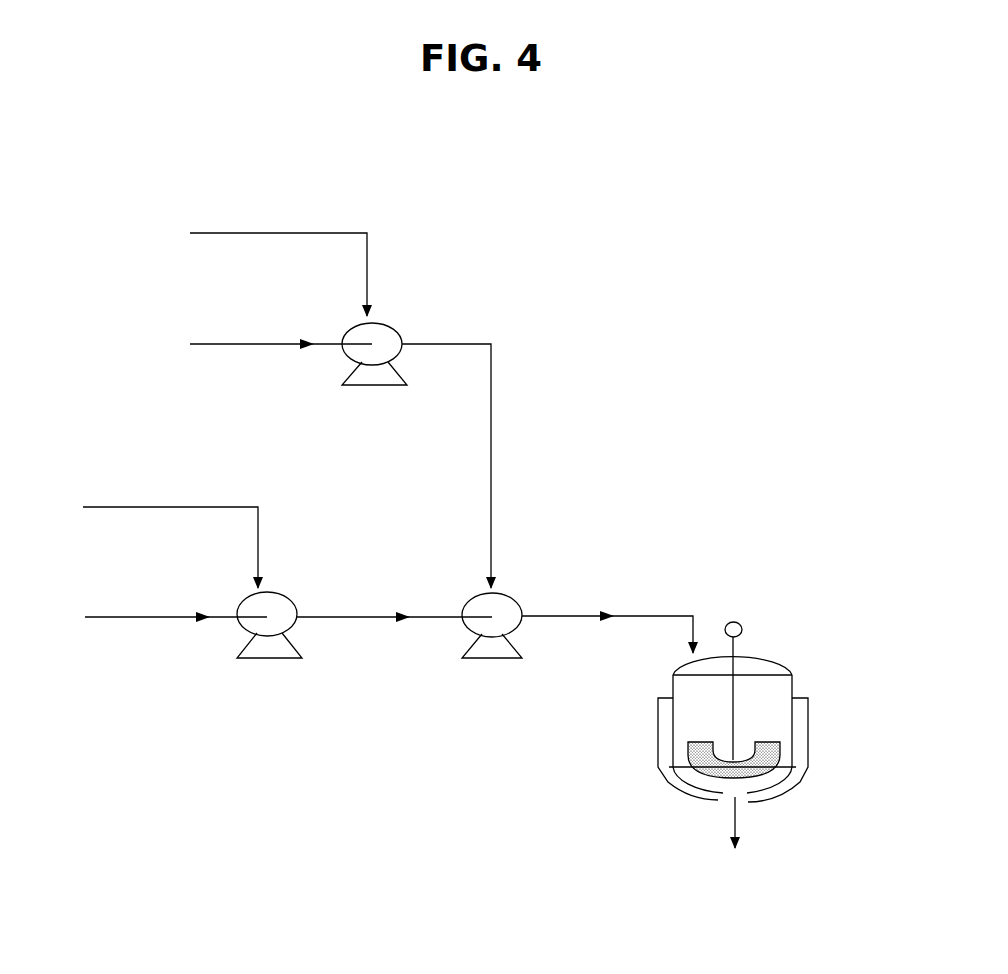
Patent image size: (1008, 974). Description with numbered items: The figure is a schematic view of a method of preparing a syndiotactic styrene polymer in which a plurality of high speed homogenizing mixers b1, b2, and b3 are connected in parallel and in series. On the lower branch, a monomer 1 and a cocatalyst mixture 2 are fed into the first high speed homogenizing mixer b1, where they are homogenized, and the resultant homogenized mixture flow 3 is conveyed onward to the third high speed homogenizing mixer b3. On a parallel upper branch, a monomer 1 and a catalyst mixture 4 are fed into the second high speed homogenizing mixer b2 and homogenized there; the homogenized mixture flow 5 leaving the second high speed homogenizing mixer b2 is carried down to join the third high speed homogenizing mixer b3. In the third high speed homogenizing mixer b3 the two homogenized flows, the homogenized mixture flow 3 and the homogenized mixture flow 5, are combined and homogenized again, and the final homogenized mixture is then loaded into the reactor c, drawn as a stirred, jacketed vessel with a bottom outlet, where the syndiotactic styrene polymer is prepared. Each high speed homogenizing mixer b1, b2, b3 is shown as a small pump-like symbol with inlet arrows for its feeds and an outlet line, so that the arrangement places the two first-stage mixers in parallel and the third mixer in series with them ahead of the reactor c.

The monomer 1 is at (208, 486).
The cocatalyst mixture 2 is at (152, 543).
The homogenized mixture flow 3 is at (394, 602).
The catalyst mixture 4 is at (262, 270).
The final homogenized mixture flow 5 is at (446, 466).
The first high speed homogenizing mixer b1 is at (268, 659).
The second high speed homogenizing mixer b2 is at (392, 320).
The third high speed homogenizing mixer b3 is at (508, 596).
The reactor c is at (775, 657).